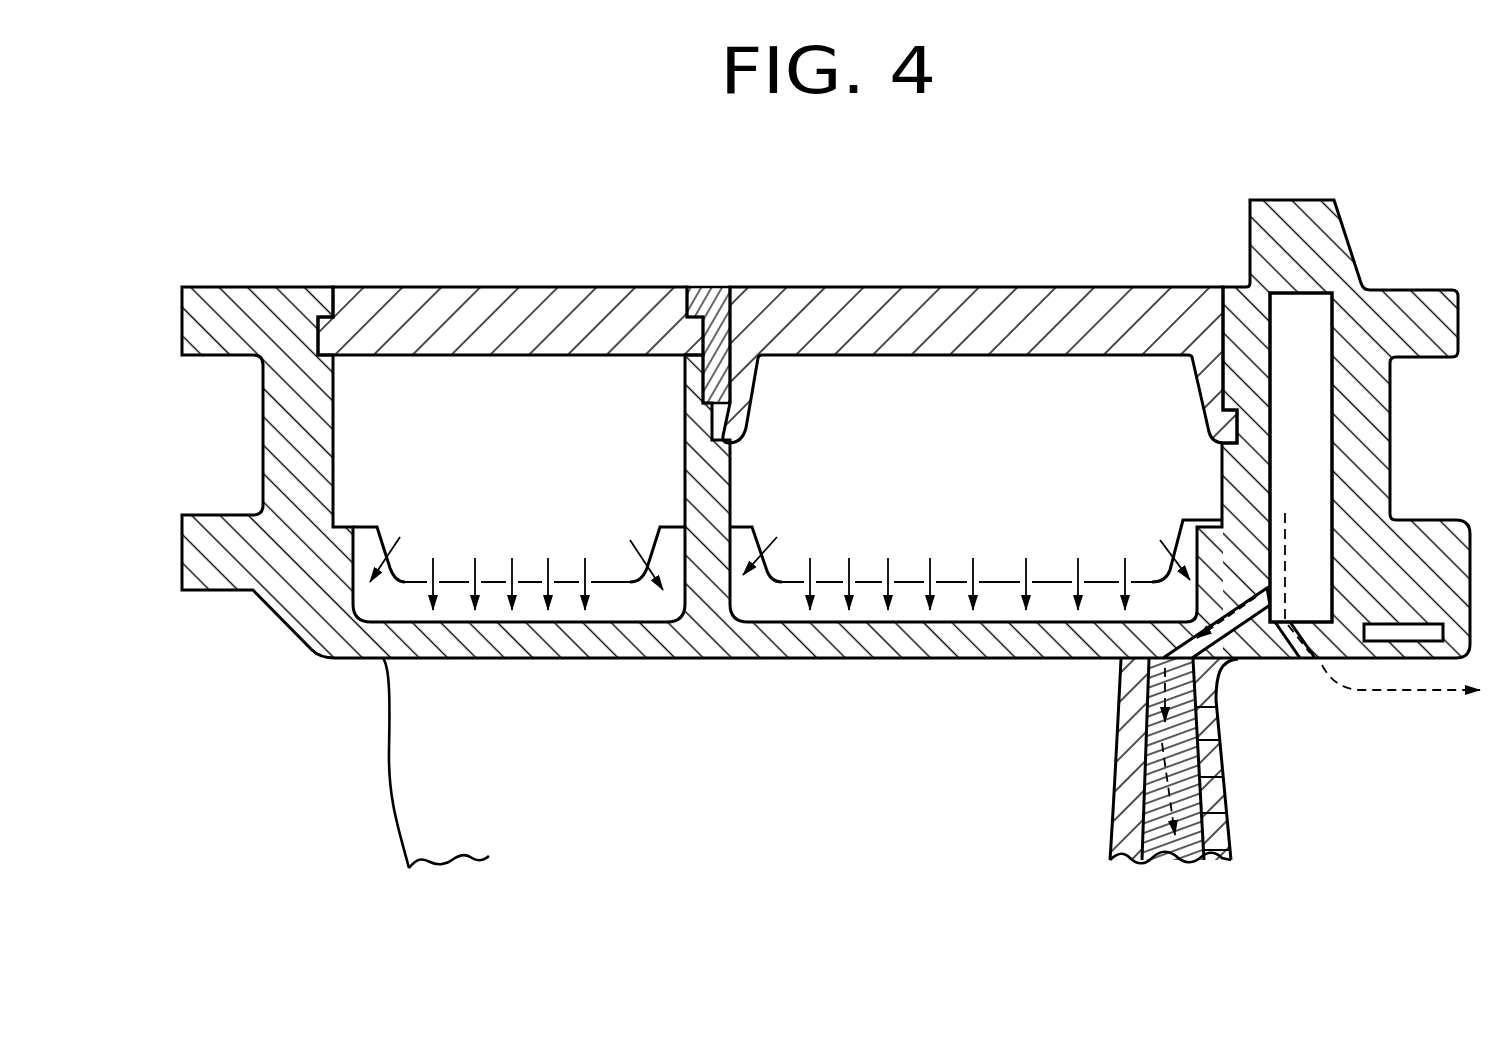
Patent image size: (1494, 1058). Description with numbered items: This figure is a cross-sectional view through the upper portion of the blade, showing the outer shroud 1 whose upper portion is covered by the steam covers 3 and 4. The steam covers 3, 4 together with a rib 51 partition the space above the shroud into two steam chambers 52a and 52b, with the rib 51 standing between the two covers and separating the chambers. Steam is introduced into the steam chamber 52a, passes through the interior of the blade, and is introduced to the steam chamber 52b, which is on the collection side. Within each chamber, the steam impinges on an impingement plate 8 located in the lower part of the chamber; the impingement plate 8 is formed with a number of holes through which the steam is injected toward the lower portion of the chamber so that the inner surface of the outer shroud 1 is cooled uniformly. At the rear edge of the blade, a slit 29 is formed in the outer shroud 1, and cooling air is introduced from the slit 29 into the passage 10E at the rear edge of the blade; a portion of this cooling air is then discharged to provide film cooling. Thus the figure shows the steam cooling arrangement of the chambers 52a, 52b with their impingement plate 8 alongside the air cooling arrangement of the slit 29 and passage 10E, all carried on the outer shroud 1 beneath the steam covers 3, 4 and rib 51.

The outer shroud 1 is at (1060, 256).
The steam cover 3 is at (438, 288).
The steam cover 4 is at (815, 288).
The rib 51 is at (718, 288).
The slit 29 is at (1307, 310).
The impingement plate 8 is at (380, 528).
The steam chamber 52a is at (368, 418).
The steam chamber 52b is at (813, 418).
The passage 10E is at (1216, 743).